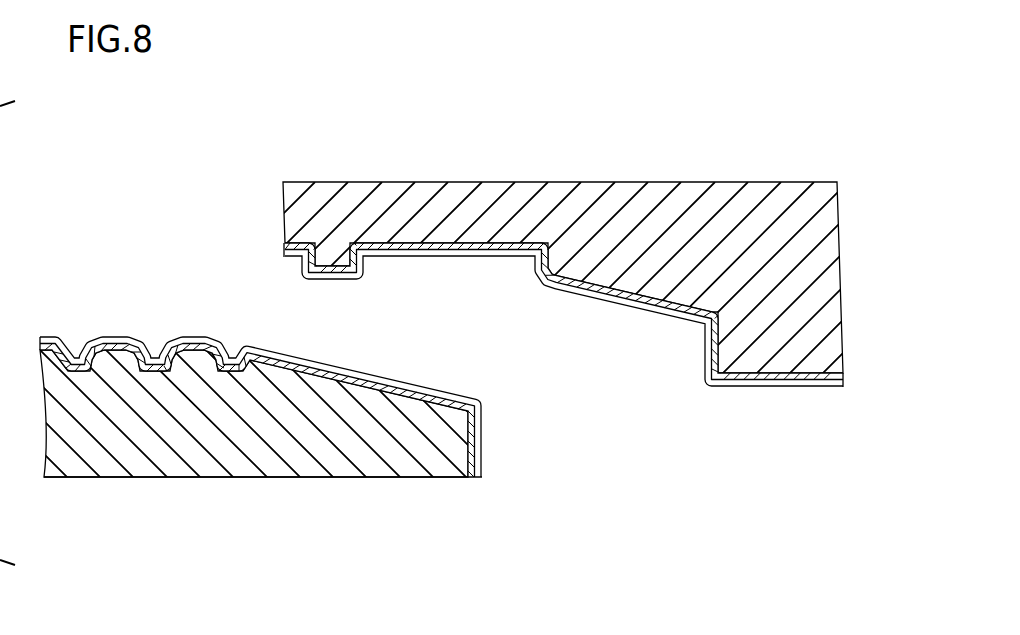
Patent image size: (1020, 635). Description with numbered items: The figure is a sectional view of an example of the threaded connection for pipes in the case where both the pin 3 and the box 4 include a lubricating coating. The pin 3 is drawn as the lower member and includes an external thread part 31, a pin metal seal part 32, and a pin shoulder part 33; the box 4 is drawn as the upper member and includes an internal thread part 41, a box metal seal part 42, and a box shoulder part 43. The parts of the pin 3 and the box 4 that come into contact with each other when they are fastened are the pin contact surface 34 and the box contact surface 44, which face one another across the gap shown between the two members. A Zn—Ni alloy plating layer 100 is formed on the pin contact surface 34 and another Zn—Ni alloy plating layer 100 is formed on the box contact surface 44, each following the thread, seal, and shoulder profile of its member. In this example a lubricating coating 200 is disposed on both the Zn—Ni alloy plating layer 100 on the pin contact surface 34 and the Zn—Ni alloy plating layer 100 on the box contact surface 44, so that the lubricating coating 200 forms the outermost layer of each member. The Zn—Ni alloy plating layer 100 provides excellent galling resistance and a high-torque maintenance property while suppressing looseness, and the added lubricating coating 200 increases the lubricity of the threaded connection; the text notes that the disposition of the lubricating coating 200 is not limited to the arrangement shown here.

The pin 3 is at (248, 499).
The box 4 is at (729, 162).
The external thread part 31 is at (115, 341).
The pin metal seal part 32 is at (367, 387).
The pin shoulder part 33 is at (480, 412).
The pin contact surface 34 is at (189, 322).
The internal thread part 41 is at (337, 243).
The box metal seal part 42 is at (596, 262).
The box shoulder part 43 is at (790, 346).
The box contact surface 44 is at (613, 334).
The Zn—Ni alloy plating layer 100 is at (808, 382).
The lubricating coating 200 is at (745, 388).